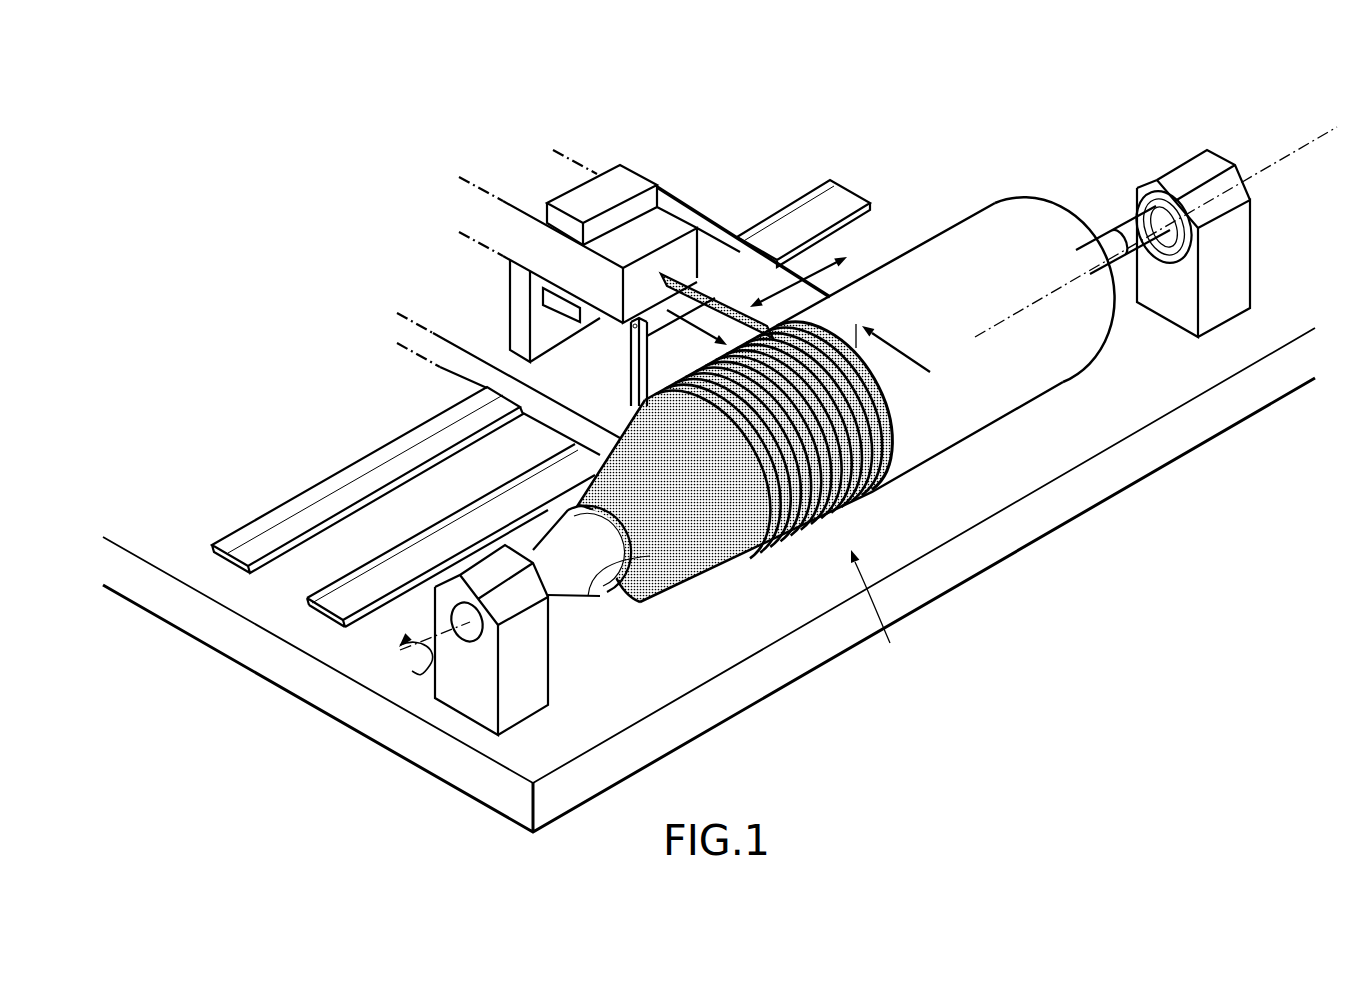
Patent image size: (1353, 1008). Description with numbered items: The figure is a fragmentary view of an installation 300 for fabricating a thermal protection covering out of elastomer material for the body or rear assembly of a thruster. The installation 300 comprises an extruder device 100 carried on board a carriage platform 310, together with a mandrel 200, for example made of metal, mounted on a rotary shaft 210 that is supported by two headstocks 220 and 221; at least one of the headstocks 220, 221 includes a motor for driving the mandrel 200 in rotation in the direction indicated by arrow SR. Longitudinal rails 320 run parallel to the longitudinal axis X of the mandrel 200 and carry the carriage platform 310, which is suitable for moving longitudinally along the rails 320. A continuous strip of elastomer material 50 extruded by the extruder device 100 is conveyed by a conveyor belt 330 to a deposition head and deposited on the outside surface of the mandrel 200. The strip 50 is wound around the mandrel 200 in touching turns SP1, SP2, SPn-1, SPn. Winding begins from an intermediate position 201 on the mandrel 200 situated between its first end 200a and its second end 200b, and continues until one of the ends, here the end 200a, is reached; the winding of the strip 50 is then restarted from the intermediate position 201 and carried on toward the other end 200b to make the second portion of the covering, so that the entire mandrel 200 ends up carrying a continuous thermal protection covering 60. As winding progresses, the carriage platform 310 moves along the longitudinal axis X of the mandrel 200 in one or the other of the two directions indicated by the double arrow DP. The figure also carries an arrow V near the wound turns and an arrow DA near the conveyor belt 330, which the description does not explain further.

The installation 300 is at (573, 127).
The extruder device 100 is at (615, 142).
The carriage platform 310 is at (712, 236).
The longitudinal rails 320 is at (258, 553).
The conveyor belt 330 is at (657, 313).
The continuous strip of elastomer material 50 is at (713, 303).
The mandrel 200 is at (981, 457).
The intermediate position 201 is at (888, 390).
The first end 200a is at (587, 596).
The second end 200b is at (1008, 195).
The rotary shaft 210 is at (1125, 232).
The headstock 220 is at (470, 693).
The headstock 221 is at (1237, 243).
The continuous thermal protection covering 60 is at (884, 609).
The longitudinal axis X is at (1306, 138).
The velocity vector V is at (904, 356).
The arrow indicating direction of rotation SR is at (412, 638).
The axial feed direction DA is at (661, 316).
The double arrow indicating carriage directions DP is at (799, 277).
The touching turn SP1 is at (900, 470).
The touching turn SP2 is at (893, 478).
The touching turn SPn-1 is at (769, 563).
The touching turn SPn is at (740, 578).